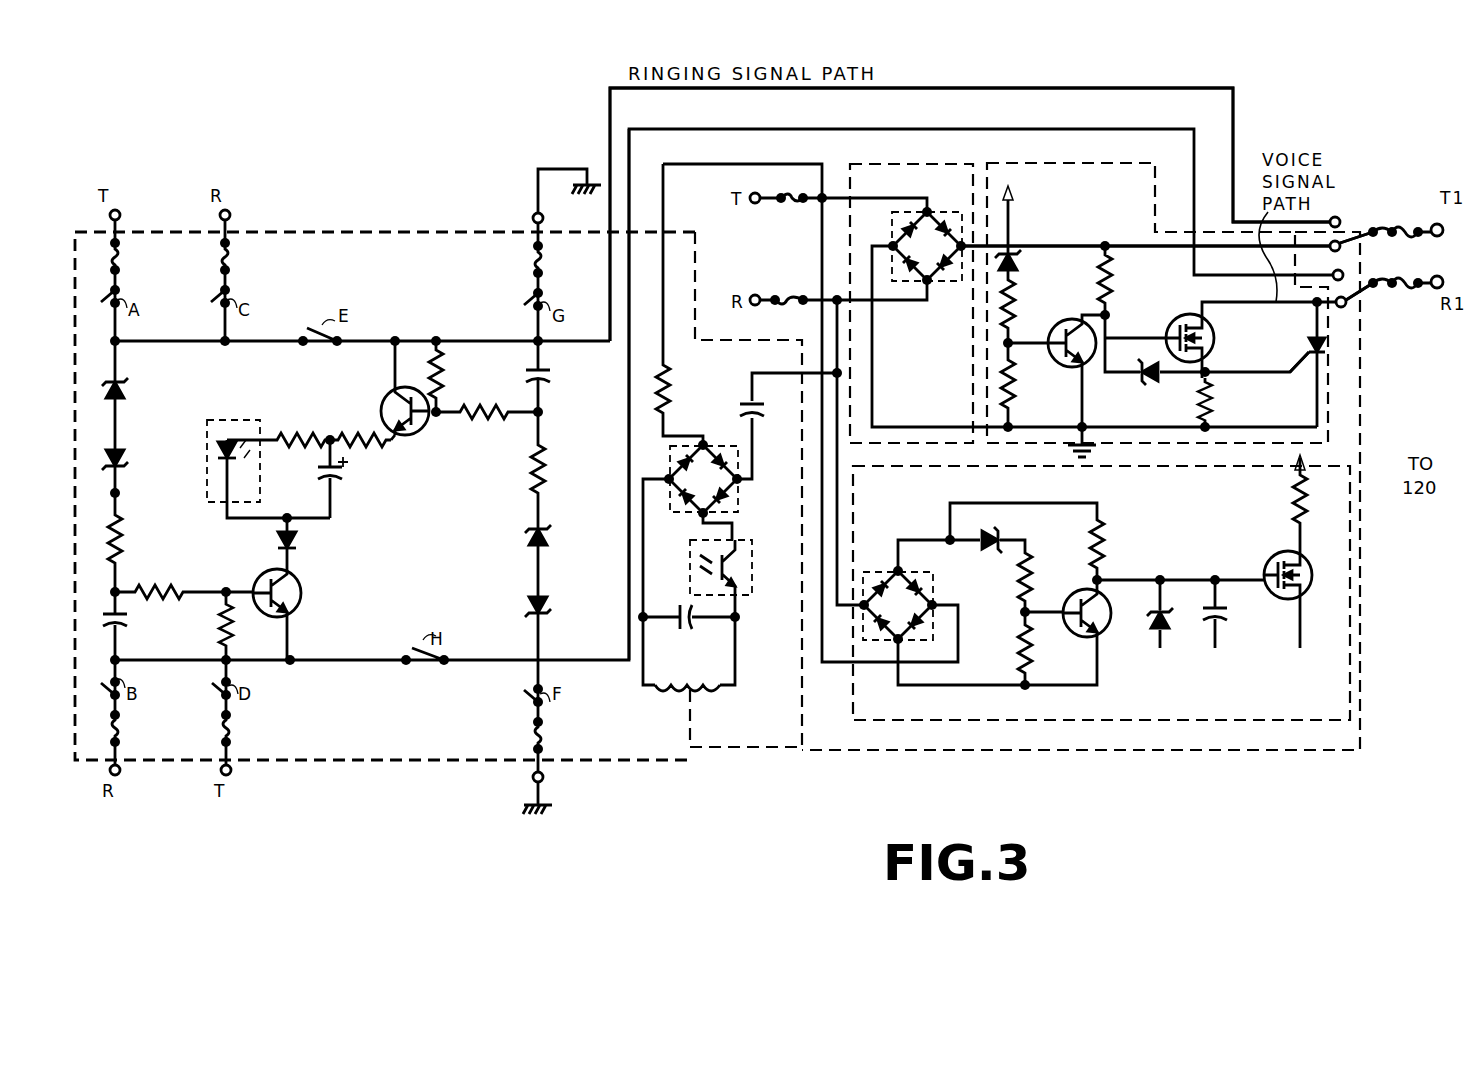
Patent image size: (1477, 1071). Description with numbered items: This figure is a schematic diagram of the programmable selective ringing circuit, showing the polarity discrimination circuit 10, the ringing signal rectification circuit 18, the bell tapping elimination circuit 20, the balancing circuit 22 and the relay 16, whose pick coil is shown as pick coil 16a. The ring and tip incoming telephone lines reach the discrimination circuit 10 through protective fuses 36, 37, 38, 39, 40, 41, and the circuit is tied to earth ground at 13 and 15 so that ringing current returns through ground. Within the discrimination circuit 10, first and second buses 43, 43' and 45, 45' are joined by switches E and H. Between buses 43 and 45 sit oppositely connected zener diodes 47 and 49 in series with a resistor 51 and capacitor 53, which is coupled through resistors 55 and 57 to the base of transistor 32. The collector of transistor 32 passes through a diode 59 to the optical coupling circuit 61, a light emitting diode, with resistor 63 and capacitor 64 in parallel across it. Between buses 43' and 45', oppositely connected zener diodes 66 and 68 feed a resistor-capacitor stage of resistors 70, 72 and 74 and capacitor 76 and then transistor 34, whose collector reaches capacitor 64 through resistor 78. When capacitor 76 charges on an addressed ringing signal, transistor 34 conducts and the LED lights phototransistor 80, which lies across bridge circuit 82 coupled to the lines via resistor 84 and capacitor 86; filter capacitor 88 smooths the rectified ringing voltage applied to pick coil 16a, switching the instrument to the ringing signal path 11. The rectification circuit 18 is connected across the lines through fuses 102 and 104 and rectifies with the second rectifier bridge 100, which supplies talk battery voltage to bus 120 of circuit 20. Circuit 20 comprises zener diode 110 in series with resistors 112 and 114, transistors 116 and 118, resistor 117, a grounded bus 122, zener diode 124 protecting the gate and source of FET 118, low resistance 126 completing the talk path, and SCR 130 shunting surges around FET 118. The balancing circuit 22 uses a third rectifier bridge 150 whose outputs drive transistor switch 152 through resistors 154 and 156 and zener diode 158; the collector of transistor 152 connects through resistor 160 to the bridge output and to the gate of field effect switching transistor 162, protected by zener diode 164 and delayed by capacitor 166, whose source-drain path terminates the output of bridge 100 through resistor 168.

The polarity discrimination circuit 10 is at (412, 765).
The ringing signal path 11 is at (610, 90).
The ground connection 13 is at (582, 140).
The ground connection 15 is at (548, 812).
The relay 16 is at (1372, 205).
The pick coil 16a is at (705, 690).
The ringing signal rectification circuit 18 is at (958, 160).
The bell tapping elimination circuit 20 is at (1075, 162).
The balancing circuit 22 is at (1272, 722).
The transistor switch 32 is at (305, 588).
The transistor switch 34 is at (415, 440).
The protective fuse 36 is at (120, 252).
The protective fuse 37 is at (230, 258).
The protective fuse 38 is at (530, 262).
The protective fuse 39 is at (120, 730).
The protective fuse 40 is at (232, 730).
The protective fuse 41 is at (530, 748).
The first bus 43 is at (209, 360).
The first bus 43' is at (473, 313).
The second bus 45 is at (260, 644).
The second bus 45' is at (524, 420).
The zener diode 47 is at (132, 392).
The zener diode 49 is at (130, 462).
The resistor 51 is at (122, 548).
The capacitor 53 is at (122, 620).
The resistor 55 is at (172, 590).
The resistor 57 is at (230, 620).
The diode 59 is at (298, 540).
The optical coupling circuit 61 is at (258, 496).
The resistor 63 is at (305, 432).
The capacitor 64 is at (340, 478).
The zener diode 66 is at (550, 545).
The zener diode 68 is at (550, 605).
The resistor 70 is at (546, 480).
The resistor 72 is at (492, 420).
The resistor 74 is at (442, 372).
The capacitor 76 is at (550, 380).
The resistor 78 is at (362, 436).
The phototransistor 80 is at (755, 568).
The bridge circuit 82 is at (745, 498).
The resistor 84 is at (670, 382).
The capacitor 86 is at (760, 413).
The filter capacitor 88 is at (680, 630).
The second rectifier bridge 100 is at (962, 215).
The protective fuse 102 is at (800, 198).
The protective fuse 104 is at (803, 300).
The zener diode 110 is at (1016, 262).
The resistor 112 is at (1016, 300).
The resistor 114 is at (1016, 388).
The transistor 116 is at (1085, 368).
The resistor 117 is at (1110, 268).
The field effect transistor 118 is at (1172, 322).
The bus 120 is at (1055, 245).
The bus 122 is at (1090, 427).
The zener diode 124 is at (1165, 372).
The resistor 126 is at (1212, 402).
The SCR 130 is at (1327, 350).
The third rectifier bridge 150 is at (935, 582).
The transistor switch 152 is at (1102, 640).
The resistor 154 is at (1035, 572).
The resistor 156 is at (1032, 652).
The zener diode 158 is at (992, 532).
The resistor 160 is at (1110, 545).
The field effect switching transistor 162 is at (1280, 552).
The zener diode 164 is at (1170, 625).
The capacitor 166 is at (1225, 620).
The resistor 168 is at (1310, 498).